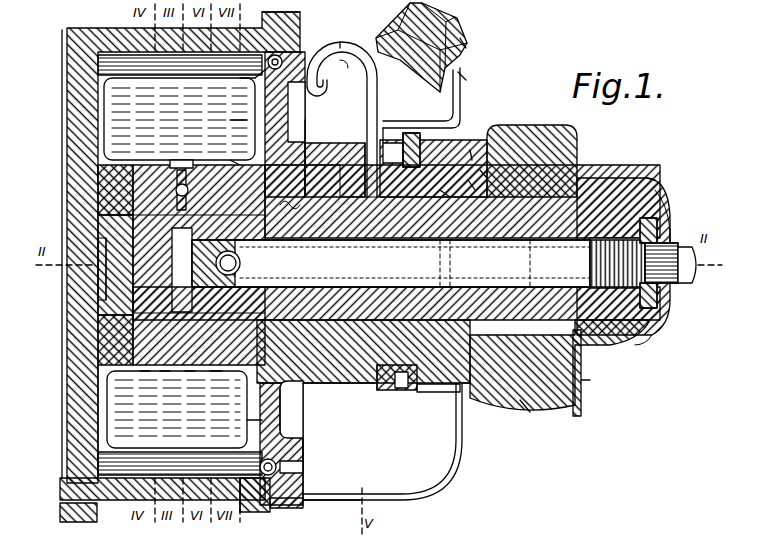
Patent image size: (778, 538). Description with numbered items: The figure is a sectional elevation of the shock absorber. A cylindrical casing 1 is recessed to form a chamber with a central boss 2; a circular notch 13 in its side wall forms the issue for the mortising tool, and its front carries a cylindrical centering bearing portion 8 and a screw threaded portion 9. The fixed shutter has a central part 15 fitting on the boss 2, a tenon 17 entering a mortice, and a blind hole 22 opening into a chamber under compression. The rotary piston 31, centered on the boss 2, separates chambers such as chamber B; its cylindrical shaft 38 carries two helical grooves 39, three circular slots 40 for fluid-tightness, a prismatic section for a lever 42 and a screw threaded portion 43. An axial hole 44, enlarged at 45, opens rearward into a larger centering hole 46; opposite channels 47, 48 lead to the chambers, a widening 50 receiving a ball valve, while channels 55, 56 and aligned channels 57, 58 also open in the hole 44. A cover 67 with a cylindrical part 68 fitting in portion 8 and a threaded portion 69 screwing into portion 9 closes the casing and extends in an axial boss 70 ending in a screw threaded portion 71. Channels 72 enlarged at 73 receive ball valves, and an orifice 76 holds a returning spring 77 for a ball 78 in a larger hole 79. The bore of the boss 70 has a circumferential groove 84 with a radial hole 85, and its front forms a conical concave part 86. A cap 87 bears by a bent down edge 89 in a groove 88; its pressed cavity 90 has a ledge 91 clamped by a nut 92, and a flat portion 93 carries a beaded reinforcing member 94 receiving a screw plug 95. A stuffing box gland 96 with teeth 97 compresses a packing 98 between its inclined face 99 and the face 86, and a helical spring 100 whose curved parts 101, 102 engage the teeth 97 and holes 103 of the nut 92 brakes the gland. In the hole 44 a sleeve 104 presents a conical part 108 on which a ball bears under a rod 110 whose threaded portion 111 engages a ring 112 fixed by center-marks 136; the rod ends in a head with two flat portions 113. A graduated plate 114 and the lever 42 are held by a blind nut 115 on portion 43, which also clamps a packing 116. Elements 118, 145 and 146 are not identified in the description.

The casing 1 is at (80, 398).
The boss 2 is at (178, 262).
The cylindrical centering bearing portion 8 is at (255, 512).
The screw threaded portion 9 is at (310, 502).
The circular notch 13 is at (100, 276).
The central part 15 is at (100, 178).
The tenon 17 is at (100, 366).
The blind hole 22 is at (108, 296).
The rotary piston 31 is at (145, 378).
The cylindrical shaft 38 is at (346, 383).
The helical grooves 39 is at (372, 286).
The circular slots 40 is at (232, 525).
The lever 42 is at (577, 416).
The screw threaded portion 43 is at (590, 198).
The axial cylindrical hole 44 is at (540, 242).
The enlargement 45 is at (612, 340).
The hole 46 is at (165, 378).
The channel 47 is at (180, 168).
The channel 48 is at (190, 376).
The widening 50 is at (290, 212).
The channel 55 is at (316, 131).
The channel 56 is at (304, 410).
The channel 57 is at (234, 166).
The channel 58 is at (234, 392).
The cover 67 is at (302, 436).
The cylindrical part 68 is at (280, 58).
The screw threaded portion 69 is at (342, 42).
The axial boss 70 is at (216, 374).
The screw threaded portion 71 is at (410, 392).
The holes or channels 72 is at (303, 467).
The enlargement 73 is at (262, 424).
The orifice 76 is at (262, 80).
The returning spring 77 is at (372, 60).
The ball 78 is at (247, 84).
The hole 79 is at (230, 122).
The circumferential groove 84 is at (360, 386).
The radial hole 85 is at (318, 242).
The conical concave part 86 is at (520, 130).
The cap 87 is at (456, 476).
The groove 88 is at (285, 508).
The bent down edge 89 is at (278, 28).
The pressed cavity 90 is at (462, 430).
The ledge 91 is at (390, 140).
The nut 92 is at (430, 138).
The flat portion 93 is at (462, 72).
The beaded reinforcing member 94 is at (440, 28).
The screw plug 95 is at (468, 46).
The stuffing box gland 96 is at (446, 192).
The teeth 97 is at (470, 182).
The fluid-tight packing 98 is at (522, 404).
The inclined face 99 is at (484, 172).
The spring 100 is at (472, 150).
The curved part 101 is at (475, 388).
The curved part 102 is at (400, 390).
The holes 103 is at (304, 157).
The sleeve 104 is at (335, 163).
The conical part 108 is at (408, 150).
The rod 110 is at (350, 154).
The screw threaded portion 111 is at (652, 180).
The ring 112 is at (655, 312).
The flat portions 113 is at (656, 292).
The graduated plate 114 is at (582, 382).
The nut 115 is at (650, 340).
The fluid-tight packing 116 is at (672, 232).
The bracket 118 is at (240, 500).
The center-marks 136 is at (660, 212).
The recess 145 is at (302, 124).
The hook 146 is at (344, 74).
The chamber B is at (180, 107).